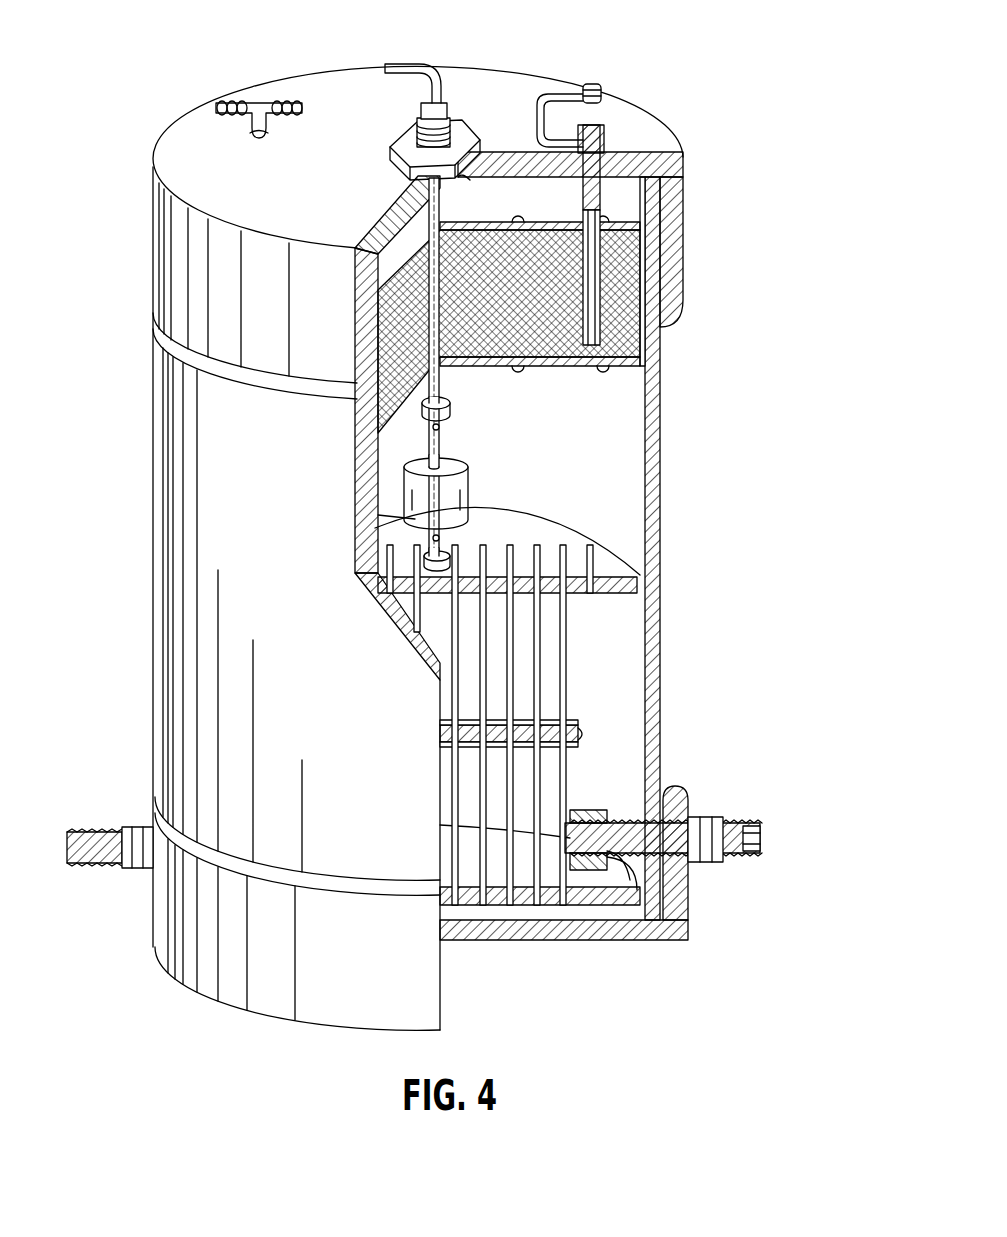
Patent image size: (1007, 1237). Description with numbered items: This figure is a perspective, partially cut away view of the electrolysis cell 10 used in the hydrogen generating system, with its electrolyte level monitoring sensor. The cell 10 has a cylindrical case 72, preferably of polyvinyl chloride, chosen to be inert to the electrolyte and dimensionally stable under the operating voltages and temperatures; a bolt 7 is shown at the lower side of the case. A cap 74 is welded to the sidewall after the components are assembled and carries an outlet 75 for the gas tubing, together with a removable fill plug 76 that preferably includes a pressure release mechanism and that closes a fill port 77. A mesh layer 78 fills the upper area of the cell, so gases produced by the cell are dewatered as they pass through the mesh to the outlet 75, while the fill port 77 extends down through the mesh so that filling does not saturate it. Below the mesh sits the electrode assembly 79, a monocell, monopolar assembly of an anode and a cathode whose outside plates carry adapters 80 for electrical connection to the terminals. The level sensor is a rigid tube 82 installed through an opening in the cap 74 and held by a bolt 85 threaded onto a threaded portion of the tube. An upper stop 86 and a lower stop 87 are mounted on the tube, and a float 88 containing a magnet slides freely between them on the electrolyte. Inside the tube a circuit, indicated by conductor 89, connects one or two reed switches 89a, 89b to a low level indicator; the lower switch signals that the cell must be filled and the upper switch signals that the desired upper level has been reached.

The electrolysis cell 10 is at (690, 636).
The bolt 7 is at (730, 862).
The case 72 is at (177, 615).
The cap 74 is at (673, 208).
The outlet 75 is at (257, 100).
The fill plug 76 is at (590, 83).
The fill port 77 is at (597, 148).
The mesh layer 78 is at (645, 340).
The electrode assembly 79 is at (568, 648).
The adapters 80 is at (587, 810).
The rigid tube 82 is at (440, 440).
The bolt 85 is at (410, 133).
The upper stop 86 is at (450, 408).
The lower stop 87 is at (523, 512).
The float 88 is at (465, 490).
The conductor 89 is at (395, 70).
The reed switch 89a is at (430, 429).
The reed switch 89b is at (425, 556).